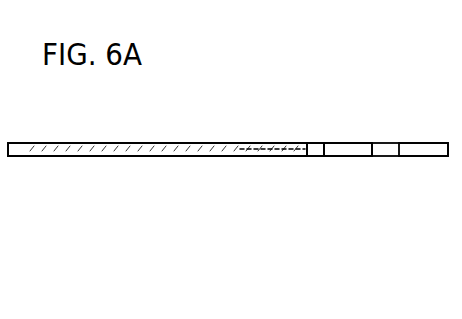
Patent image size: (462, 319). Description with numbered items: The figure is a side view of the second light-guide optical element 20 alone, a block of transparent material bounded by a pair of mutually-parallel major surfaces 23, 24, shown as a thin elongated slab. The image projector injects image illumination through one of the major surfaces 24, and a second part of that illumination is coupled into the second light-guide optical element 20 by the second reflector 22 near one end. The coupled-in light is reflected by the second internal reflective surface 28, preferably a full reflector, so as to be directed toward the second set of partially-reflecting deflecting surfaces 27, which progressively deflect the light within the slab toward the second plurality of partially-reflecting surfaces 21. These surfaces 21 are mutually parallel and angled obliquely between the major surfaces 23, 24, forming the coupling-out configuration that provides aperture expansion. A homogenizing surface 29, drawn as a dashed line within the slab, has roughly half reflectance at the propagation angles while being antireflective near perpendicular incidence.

The second light-guide optical element 20 is at (228, 192).
The second plurality of partially-reflecting surfaces 21 is at (108, 163).
The second reflector 22 is at (411, 165).
The major surface 23 is at (186, 163).
The major surface 24 is at (276, 165).
The second set of partially-reflecting deflecting surfaces 27 is at (316, 165).
The second internal reflective surface 28 is at (354, 165).
The homogenizing surface 29 is at (258, 141).